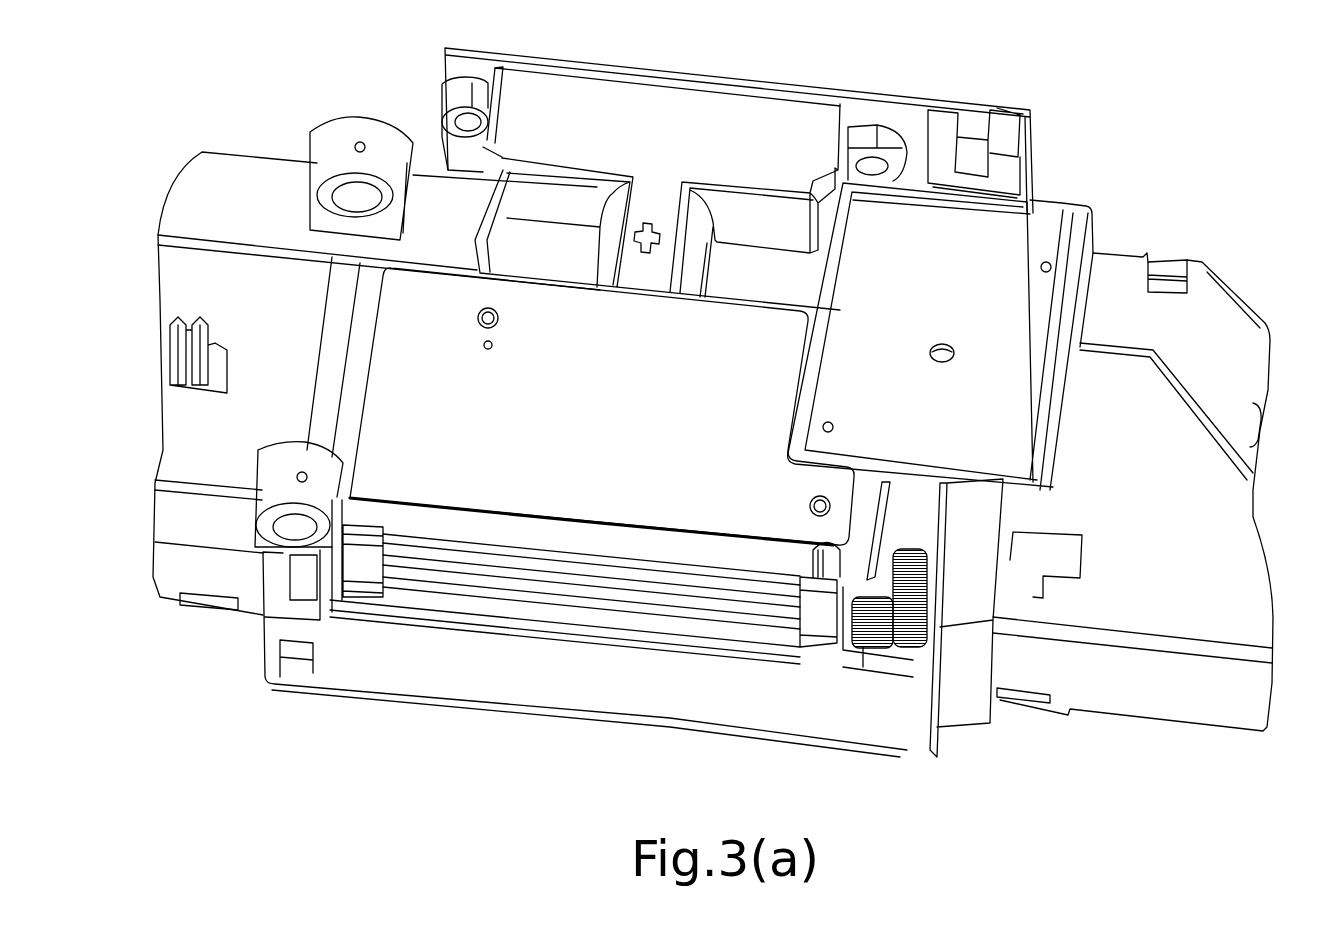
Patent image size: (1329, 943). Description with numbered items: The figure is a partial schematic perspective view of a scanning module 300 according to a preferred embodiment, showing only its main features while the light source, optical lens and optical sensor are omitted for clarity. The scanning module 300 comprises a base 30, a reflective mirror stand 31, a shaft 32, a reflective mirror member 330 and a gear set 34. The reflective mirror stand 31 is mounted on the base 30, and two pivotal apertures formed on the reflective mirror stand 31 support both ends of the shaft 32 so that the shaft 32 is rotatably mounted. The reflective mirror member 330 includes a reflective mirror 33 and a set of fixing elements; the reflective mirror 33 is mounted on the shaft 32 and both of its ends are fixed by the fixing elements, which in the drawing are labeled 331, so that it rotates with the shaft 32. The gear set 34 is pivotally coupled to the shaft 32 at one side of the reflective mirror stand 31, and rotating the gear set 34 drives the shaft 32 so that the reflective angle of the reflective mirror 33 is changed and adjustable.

The scanning module 300 is at (790, 63).
The base 30 is at (1208, 328).
The reflective mirror 33 is at (557, 567).
The reflective mirror member 330 is at (508, 527).
The shaft 32 is at (643, 600).
The end bracket 331 is at (812, 610).
The reflective mirror stand 31 is at (847, 657).
The gear set 34 is at (930, 597).